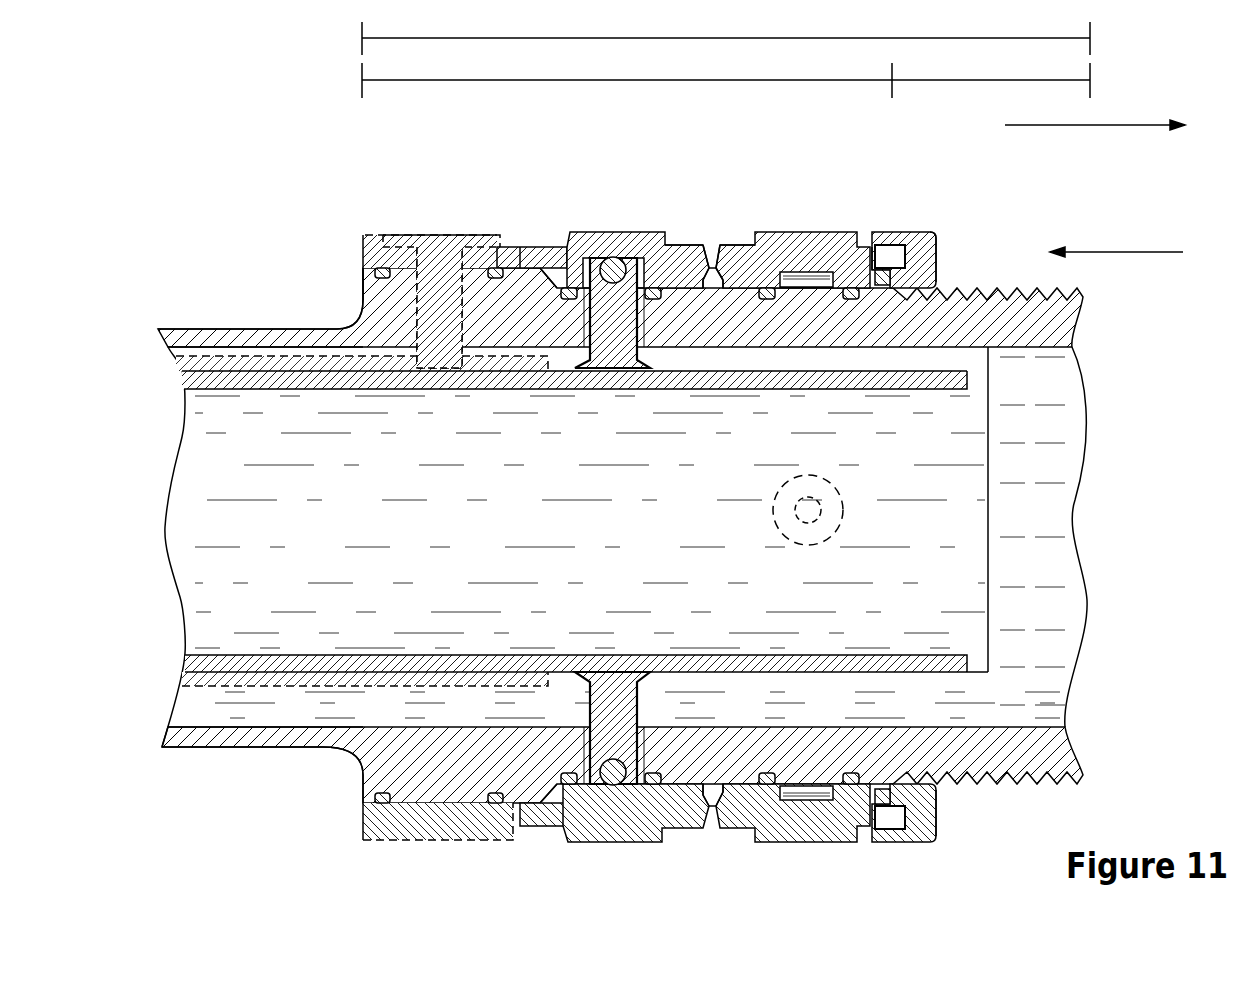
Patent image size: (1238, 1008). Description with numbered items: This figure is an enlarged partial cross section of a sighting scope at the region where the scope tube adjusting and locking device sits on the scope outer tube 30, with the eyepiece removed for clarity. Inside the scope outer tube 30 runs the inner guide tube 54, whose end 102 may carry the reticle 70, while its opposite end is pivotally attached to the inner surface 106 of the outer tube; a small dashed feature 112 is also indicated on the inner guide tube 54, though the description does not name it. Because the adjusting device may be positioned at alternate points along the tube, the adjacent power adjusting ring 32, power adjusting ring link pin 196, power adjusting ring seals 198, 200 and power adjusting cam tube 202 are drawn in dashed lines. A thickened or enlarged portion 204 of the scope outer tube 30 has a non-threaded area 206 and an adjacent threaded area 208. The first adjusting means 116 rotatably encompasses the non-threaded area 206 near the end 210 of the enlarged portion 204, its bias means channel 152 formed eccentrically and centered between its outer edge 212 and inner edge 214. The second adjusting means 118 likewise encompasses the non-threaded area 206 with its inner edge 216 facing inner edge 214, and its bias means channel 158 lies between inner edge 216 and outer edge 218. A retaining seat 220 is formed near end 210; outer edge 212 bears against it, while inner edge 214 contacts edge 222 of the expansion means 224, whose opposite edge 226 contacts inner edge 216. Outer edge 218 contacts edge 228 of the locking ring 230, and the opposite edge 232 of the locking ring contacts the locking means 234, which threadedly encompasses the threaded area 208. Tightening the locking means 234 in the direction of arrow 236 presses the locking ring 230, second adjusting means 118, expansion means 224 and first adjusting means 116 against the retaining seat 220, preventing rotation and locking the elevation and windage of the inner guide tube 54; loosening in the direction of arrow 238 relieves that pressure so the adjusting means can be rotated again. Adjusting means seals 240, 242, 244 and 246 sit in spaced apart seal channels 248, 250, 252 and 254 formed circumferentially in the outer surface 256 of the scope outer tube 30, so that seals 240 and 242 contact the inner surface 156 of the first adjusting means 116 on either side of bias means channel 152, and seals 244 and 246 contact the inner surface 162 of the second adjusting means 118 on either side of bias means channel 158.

The scope outer tube 30 is at (200, 333).
The power adjusting ring 32 is at (370, 252).
The inner guide tube 54 is at (178, 384).
The reticle 70 is at (990, 478).
The end of the inner guide tube 102 is at (990, 678).
The inner surface of the scope outer tube 106 is at (172, 349).
The port 112 is at (843, 510).
The first adjusting means 116 is at (582, 232).
The second adjusting means 118 is at (797, 232).
The bias means channel 152 is at (628, 235).
The inner surface of the first adjusting means 156 is at (692, 268).
The bias means channel 158 is at (807, 272).
The inner surface of the second adjusting means 162 is at (733, 276).
The power adjusting ring link pin 196 is at (420, 240).
The power adjusting ring seal 198 is at (377, 274).
The power adjusting ring seal 200 is at (478, 236).
The power adjusting cam tube 202 is at (175, 360).
The enlarged portion 204 is at (803, 38).
The non-threaded area 206 is at (655, 80).
The threaded area 208 is at (960, 80).
The end of the enlarged portion 210 is at (363, 283).
The outer edge of the first adjusting means 212 is at (581, 260).
The inner edge of the first adjusting means 214 is at (694, 258).
The inner edge of the second adjusting means 216 is at (726, 262).
The outer edge of the second adjusting means 218 is at (868, 262).
The retaining seat 220 is at (498, 262).
The edge of expansion means 222 is at (699, 248).
The expansion means 224 is at (712, 255).
The opposite edge of expansion means 226 is at (722, 247).
The edge of locking ring 228 is at (890, 252).
The locking ring 230 is at (922, 234).
The opposite edge of the locking ring 232 is at (938, 246).
The locking means 234 is at (934, 243).
The arrow 236 is at (1080, 252).
The arrow 238 is at (1100, 127).
The adjusting means seal 240 is at (552, 280).
The adjusting means seal 242 is at (656, 288).
The adjusting means seal 244 is at (767, 290).
The adjusting means seal 246 is at (884, 262).
The seal channel 248 is at (599, 233).
The seal channel 250 is at (688, 280).
The seal channel 252 is at (741, 288).
The seal channel 254 is at (850, 285).
The outer surface of the scope outer tube 256 is at (255, 329).